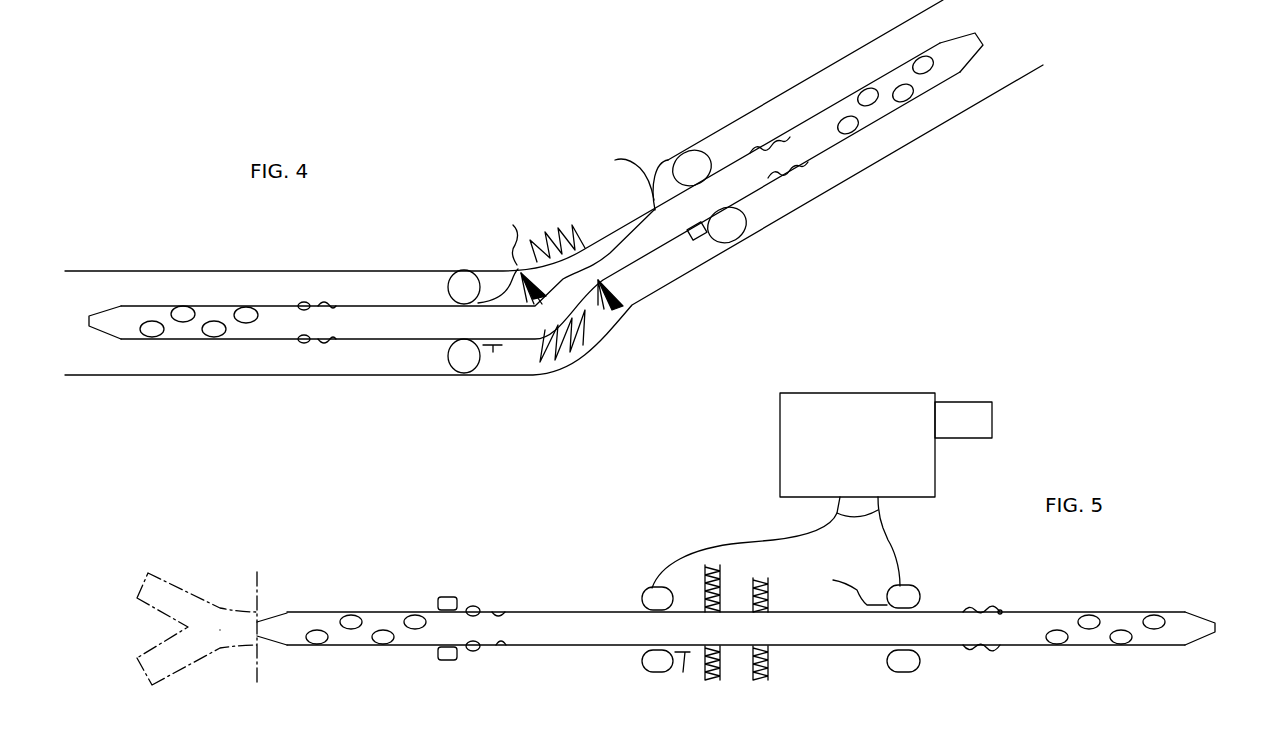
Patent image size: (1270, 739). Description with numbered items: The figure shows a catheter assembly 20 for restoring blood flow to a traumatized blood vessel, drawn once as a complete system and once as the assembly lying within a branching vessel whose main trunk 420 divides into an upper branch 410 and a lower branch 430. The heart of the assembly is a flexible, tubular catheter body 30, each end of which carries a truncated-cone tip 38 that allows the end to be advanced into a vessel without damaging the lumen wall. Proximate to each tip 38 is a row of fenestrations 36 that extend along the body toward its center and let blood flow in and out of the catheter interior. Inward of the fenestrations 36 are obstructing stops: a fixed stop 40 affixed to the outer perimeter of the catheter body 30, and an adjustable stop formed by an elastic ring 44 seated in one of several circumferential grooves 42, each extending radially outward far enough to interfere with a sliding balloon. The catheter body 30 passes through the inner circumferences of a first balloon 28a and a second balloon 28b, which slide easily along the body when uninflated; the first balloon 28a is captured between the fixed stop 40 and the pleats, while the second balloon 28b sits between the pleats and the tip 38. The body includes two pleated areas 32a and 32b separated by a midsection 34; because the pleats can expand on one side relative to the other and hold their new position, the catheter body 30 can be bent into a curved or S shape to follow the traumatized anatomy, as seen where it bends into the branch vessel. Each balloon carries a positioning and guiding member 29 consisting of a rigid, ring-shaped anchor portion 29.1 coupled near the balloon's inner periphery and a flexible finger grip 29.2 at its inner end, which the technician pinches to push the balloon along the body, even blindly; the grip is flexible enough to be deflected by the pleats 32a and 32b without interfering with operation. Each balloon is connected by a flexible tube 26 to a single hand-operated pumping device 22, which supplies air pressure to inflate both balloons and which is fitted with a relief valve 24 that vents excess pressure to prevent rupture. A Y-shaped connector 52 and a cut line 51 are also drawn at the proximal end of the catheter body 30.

In FIG. 5, the catheter assembly 20 is at (1067, 382).
In FIG. 5, the pumping device 22 is at (780, 486).
In FIG. 5, the relief valve 24 is at (990, 401).
In FIG. 5, the flexible tube 26 is at (883, 520).
In FIG. 4, the first balloon 28a is at (450, 284).
In FIG. 5, the first balloon 28a is at (650, 594).
In FIG. 4, the second balloon 28b is at (704, 150).
In FIG. 5, the second balloon 28b is at (918, 593).
In FIG. 5, the positioning and guiding member 29 is at (684, 675).
In FIG. 4, the anchor portion 29.1 is at (494, 354).
In FIG. 5, the anchor portion 29.1 is at (868, 653).
In FIG. 4, the finger grip 29.2 is at (572, 203).
In FIG. 5, the finger grip 29.2 is at (847, 583).
In FIG. 4, the catheter body 30 is at (378, 340).
In FIG. 5, the catheter body 30 is at (600, 647).
In FIG. 4, the first pleated area 32a is at (582, 362).
In FIG. 5, the first pleated area 32a is at (720, 682).
In FIG. 4, the second pleated area 32b is at (570, 227).
In FIG. 5, the second pleated area 32b is at (768, 670).
In FIG. 4, the midsection 34 is at (620, 307).
In FIG. 5, the fenestrations 36 is at (328, 640).
In FIG. 5, the tip 38 is at (268, 612).
In FIG. 5, the fixed stop 40 is at (444, 596).
In FIG. 5, the groove 42 is at (503, 648).
In FIG. 5, the ring 44 is at (473, 653).
In FIG. 5, the cut line 51 is at (238, 652).
In FIG. 5, the Y-connector 52 is at (146, 572).
In FIG. 4, the upper branch vessel 410 is at (840, 58).
In FIG. 4, the main vessel 420 is at (160, 271).
In FIG. 4, the lower branch vessel 430 is at (918, 133).